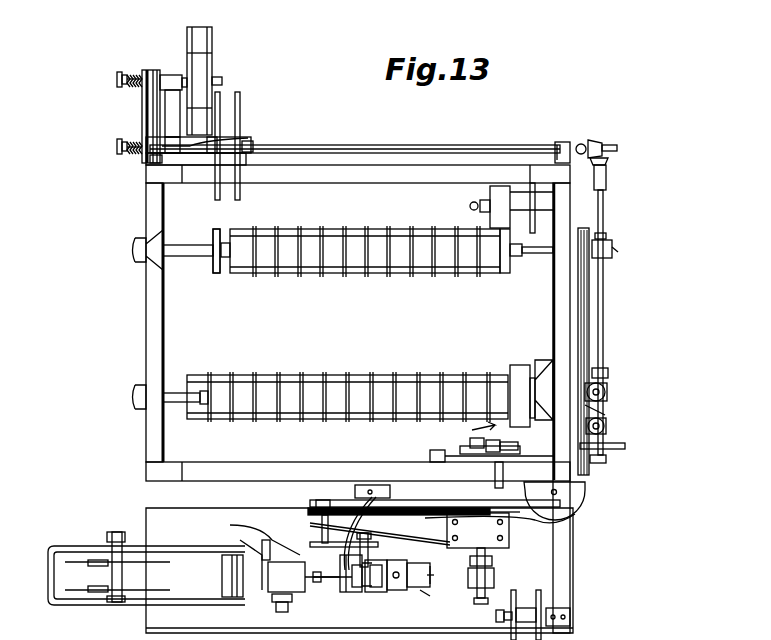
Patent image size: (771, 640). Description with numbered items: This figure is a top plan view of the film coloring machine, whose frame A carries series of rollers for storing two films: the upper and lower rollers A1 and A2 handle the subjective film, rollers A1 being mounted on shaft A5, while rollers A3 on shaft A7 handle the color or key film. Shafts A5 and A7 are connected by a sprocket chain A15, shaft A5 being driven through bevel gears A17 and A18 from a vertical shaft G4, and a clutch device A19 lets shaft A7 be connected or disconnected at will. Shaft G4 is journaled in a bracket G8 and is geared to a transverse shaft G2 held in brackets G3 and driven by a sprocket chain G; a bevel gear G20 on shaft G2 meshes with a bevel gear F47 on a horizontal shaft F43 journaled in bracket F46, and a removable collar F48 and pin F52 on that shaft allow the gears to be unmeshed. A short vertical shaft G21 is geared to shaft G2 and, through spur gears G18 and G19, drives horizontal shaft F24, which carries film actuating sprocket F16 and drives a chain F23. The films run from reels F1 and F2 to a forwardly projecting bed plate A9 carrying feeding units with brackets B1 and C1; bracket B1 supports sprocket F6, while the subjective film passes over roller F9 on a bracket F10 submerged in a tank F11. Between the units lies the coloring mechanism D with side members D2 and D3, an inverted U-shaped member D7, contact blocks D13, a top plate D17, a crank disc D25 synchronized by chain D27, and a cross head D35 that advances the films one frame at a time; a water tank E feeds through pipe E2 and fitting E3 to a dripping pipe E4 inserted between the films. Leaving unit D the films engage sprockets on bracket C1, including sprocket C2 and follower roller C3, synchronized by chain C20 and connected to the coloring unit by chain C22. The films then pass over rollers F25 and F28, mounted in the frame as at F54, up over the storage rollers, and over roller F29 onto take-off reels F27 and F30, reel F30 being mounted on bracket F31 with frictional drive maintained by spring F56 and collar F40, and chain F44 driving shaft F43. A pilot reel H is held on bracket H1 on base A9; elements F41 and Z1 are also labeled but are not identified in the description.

The frame A is at (246, 470).
The upper set of rollers A1 is at (398, 230).
The lower set of rollers A2 is at (222, 232).
The upper set of rollers A3 is at (345, 380).
The shaft A5 is at (180, 398).
The shaft A7 is at (206, 258).
The bed plate A9 is at (278, 612).
The sprocket chain A15 is at (586, 288).
The bevel gear A17 is at (606, 389).
The bevel gear A18 is at (606, 398).
The clutch device A19 is at (606, 236).
The bracket B1 is at (254, 532).
The bracket C1 is at (490, 532).
The sprocket C2 is at (493, 572).
The yieldable follower roller C3 is at (495, 582).
The sprocket chain C20 is at (578, 515).
The chain C22 is at (330, 508).
The film coloring mechanism D is at (404, 558).
The side member D2 is at (437, 588).
The side member D3 is at (420, 563).
The inverted U-shaped member D7 is at (392, 590).
The contact blocks D13 is at (378, 595).
The top plate D17 is at (445, 572).
The crank disc D25 is at (340, 587).
The sprocket chain D27 is at (312, 523).
The cross head D35 is at (357, 592).
The water tank E is at (560, 497).
The feed pipe E2 is at (440, 500).
The fitting E3 is at (370, 485).
The dripping pipe E4 is at (370, 495).
The reel F1 is at (304, 577).
The reel F2 is at (138, 590).
The film feeding sprocket F6 is at (262, 540).
The roller F9 is at (222, 577).
The bracket F10 is at (100, 592).
The tank F11 is at (66, 548).
The film actuating sprocket F16 is at (530, 480).
The chain F23 is at (515, 380).
The horizontal shaft F24 is at (438, 450).
The roller F25 is at (531, 240).
The take-off reel F27 is at (238, 118).
The roller F28 is at (514, 360).
The roller F29 is at (248, 138).
The take-off reel F30 is at (198, 65).
The bracket F31 is at (172, 74).
The collar F40 is at (117, 148).
The bracket F41 is at (150, 158).
The horizontal shaft F43 is at (380, 146).
The chain F44 is at (150, 70).
The bracket F46 is at (563, 142).
The bevel gear F47 is at (584, 145).
The collar F48 is at (603, 146).
The pin F52 is at (618, 148).
The bracket F54 is at (500, 200).
The compression spring F56 is at (135, 135).
The sprocket chain G is at (618, 445).
The shaft G2 is at (604, 212).
The bracket G3 is at (607, 186).
The vertical shaft G4 is at (608, 392).
The bracket G8 is at (608, 372).
The spur gear G18 is at (498, 440).
The spur gear G19 is at (570, 440).
The bevel gear G20 is at (610, 162).
The short vertical shaft G21 is at (606, 424).
The reel H is at (542, 604).
The bracket H1 is at (570, 612).
The pin Z1 is at (491, 525).